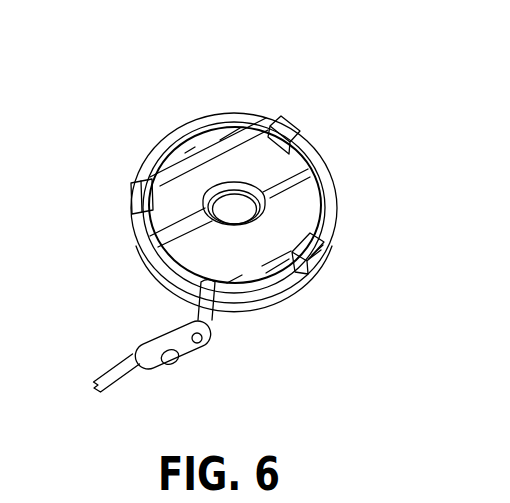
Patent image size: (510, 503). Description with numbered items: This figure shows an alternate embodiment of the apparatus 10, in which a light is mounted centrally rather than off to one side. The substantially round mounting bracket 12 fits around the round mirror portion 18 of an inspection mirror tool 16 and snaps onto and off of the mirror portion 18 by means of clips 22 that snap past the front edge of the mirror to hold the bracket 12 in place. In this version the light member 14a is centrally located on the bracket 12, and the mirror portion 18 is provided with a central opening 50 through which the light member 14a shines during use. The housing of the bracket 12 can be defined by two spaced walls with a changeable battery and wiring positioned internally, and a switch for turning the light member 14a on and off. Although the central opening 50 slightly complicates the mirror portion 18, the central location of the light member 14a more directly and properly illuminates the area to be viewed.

The apparatus 10 is at (160, 108).
The mounting bracket 12 is at (222, 115).
The light member 14a is at (257, 217).
The inspection mirror tool 16 is at (214, 369).
The mirror portion 18 is at (247, 157).
The clips 22 is at (286, 133).
The central opening 50 is at (204, 197).